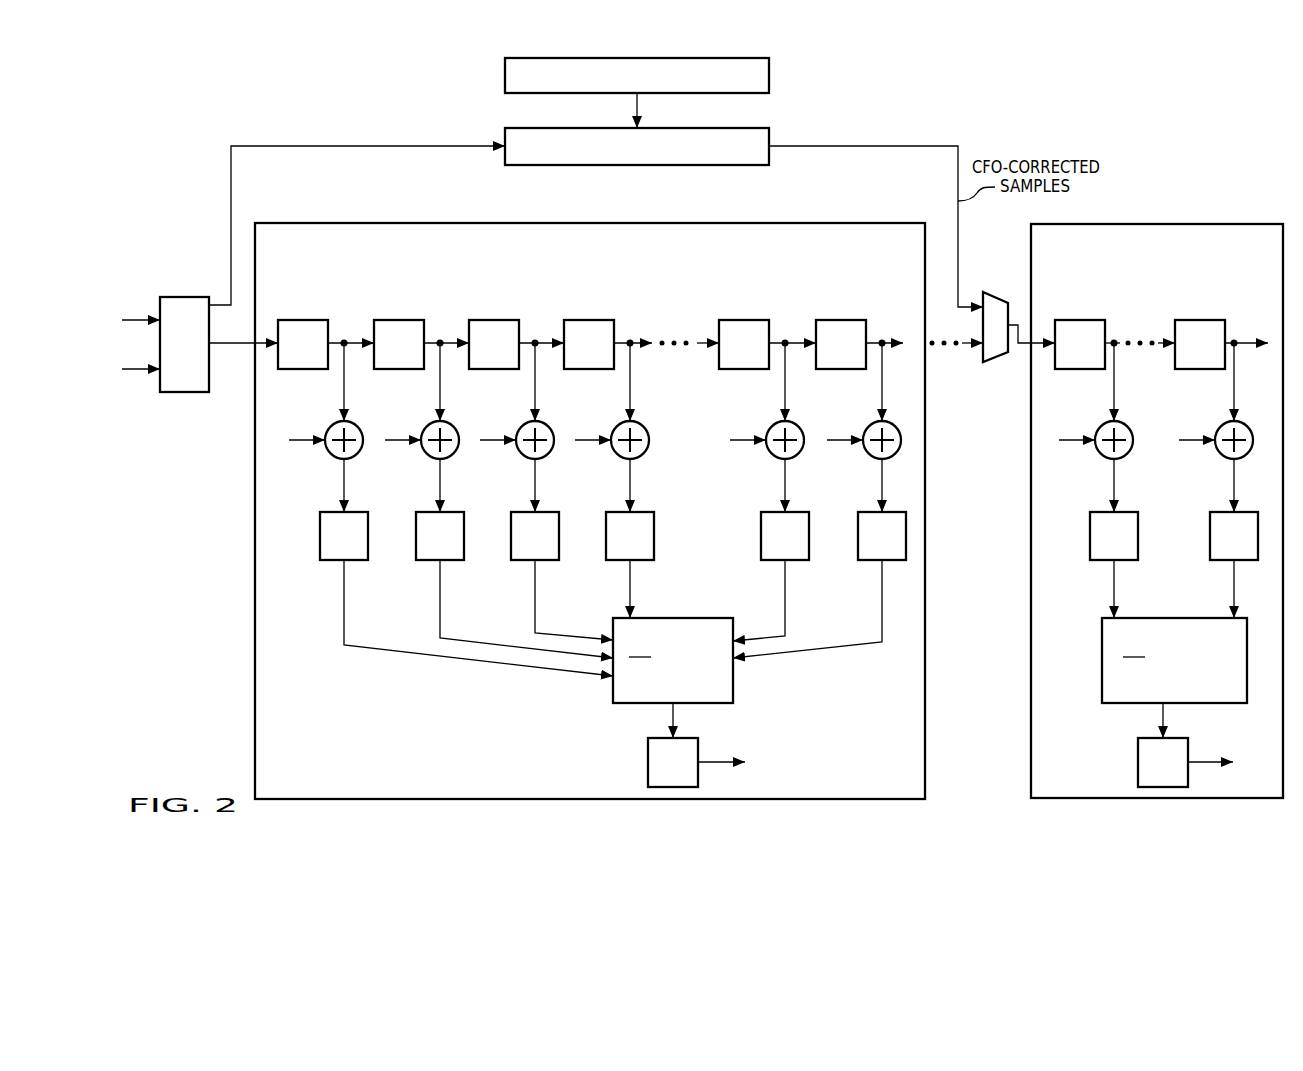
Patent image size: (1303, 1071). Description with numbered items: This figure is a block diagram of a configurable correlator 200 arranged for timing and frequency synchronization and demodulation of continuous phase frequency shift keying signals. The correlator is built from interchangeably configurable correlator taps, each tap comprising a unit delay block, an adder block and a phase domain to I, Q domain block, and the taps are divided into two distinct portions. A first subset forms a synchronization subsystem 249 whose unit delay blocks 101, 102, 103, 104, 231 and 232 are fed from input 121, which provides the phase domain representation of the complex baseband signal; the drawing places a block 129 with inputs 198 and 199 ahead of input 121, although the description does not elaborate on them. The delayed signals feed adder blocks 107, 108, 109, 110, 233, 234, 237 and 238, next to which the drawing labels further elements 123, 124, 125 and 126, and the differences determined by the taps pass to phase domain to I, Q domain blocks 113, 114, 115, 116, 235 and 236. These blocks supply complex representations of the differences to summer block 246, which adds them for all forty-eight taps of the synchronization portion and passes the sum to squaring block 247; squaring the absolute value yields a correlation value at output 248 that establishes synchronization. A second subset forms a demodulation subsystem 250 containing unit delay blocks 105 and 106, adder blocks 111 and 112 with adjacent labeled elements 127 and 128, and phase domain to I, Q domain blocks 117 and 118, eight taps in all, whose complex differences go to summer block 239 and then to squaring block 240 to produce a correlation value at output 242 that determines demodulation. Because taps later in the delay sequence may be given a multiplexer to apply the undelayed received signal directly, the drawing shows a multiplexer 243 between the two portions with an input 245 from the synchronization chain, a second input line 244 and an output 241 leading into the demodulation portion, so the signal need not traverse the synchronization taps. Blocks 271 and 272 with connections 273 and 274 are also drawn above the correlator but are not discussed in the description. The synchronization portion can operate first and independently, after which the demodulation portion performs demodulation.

The unit delay block 101 is at (295, 315).
The unit delay block 102 is at (391, 315).
The unit delay block 103 is at (486, 315).
The unit delay block 104 is at (581, 315).
The unit delay block 105 is at (1072, 315).
The unit delay block 106 is at (1192, 315).
The adder block 107 is at (357, 424).
The adder block 108 is at (453, 424).
The adder block 109 is at (548, 424).
The adder block 110 is at (643, 424).
The adder block 111 is at (1127, 424).
The adder block 112 is at (1247, 424).
The phase domain to I, Q domain block 113 is at (354, 512).
The phase domain to I, Q domain block 114 is at (450, 512).
The phase domain to I, Q domain block 115 is at (545, 512).
The phase domain to I, Q domain block 116 is at (640, 512).
The phase domain to I, Q domain block 117 is at (1097, 512).
The phase domain to I, Q domain block 118 is at (1217, 512).
The input 121 is at (235, 347).
The frequency offset input 123 is at (303, 437).
The frequency offset input 124 is at (399, 437).
The frequency offset input 125 is at (494, 437).
The frequency offset input 126 is at (589, 437).
The frequency offset input 127 is at (1073, 437).
The frequency offset input 128 is at (1193, 437).
The phase computation block 129 is at (190, 393).
The I input 198 is at (134, 318).
The Q input 199 is at (124, 376).
The configurable correlator 200 is at (246, 103).
The unit delay block 231 is at (736, 315).
The unit delay block 232 is at (833, 315).
The adder block 233 is at (798, 424).
The adder block 234 is at (895, 424).
The phase domain to I, Q domain block 235 is at (795, 512).
The phase domain to I, Q domain block 236 is at (892, 512).
The adder block 237 is at (744, 437).
The adder block 238 is at (841, 437).
The summer block 239 is at (1102, 660).
The squaring block 240 is at (1138, 764).
The multiplexer output 241 is at (1018, 351).
The output 242 is at (1197, 758).
The multiplexer 243 is at (1000, 362).
The CFO-corrected samples path 244 is at (958, 262).
The delay line input 245 is at (971, 348).
The summer block 246 is at (679, 618).
The squaring block 247 is at (648, 764).
The output 248 is at (707, 758).
The synchronization subsystem 249 is at (925, 217).
The demodulation subsystem 250 is at (1282, 218).
The ramp function generation block 271 is at (769, 68).
The CFO correction block 272 is at (769, 158).
The phase input path 273 is at (365, 146).
The ramp function output 274 is at (637, 104).